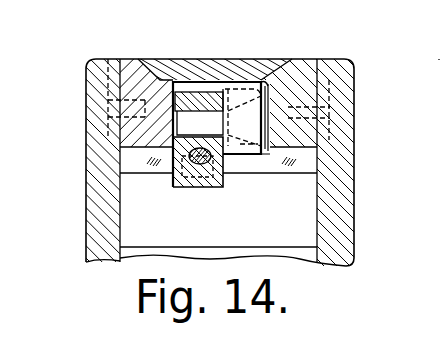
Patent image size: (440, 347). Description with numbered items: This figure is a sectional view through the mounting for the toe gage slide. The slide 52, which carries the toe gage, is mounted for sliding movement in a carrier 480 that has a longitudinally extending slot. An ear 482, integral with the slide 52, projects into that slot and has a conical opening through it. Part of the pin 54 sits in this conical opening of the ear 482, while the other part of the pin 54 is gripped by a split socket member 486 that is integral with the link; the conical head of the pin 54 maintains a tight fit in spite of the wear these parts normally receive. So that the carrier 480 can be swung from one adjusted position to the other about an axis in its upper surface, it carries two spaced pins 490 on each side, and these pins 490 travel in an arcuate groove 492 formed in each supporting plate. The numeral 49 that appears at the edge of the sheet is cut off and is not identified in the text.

The carrier 480 is at (141, 70).
The slide 52 is at (264, 73).
The spaced pins 490 is at (107, 115).
The arcuate groove 492 is at (323, 136).
The split socket member 486 is at (178, 184).
The ear 482 is at (246, 150).
The pin 54 is at (267, 150).
The housing 49 is at (431, 47).